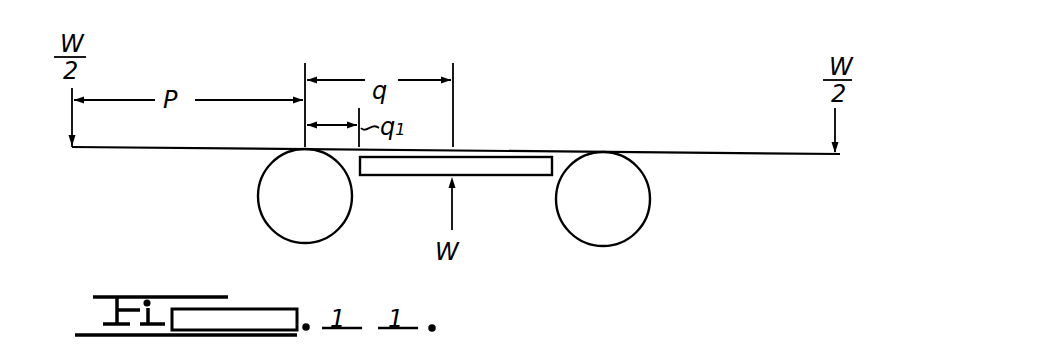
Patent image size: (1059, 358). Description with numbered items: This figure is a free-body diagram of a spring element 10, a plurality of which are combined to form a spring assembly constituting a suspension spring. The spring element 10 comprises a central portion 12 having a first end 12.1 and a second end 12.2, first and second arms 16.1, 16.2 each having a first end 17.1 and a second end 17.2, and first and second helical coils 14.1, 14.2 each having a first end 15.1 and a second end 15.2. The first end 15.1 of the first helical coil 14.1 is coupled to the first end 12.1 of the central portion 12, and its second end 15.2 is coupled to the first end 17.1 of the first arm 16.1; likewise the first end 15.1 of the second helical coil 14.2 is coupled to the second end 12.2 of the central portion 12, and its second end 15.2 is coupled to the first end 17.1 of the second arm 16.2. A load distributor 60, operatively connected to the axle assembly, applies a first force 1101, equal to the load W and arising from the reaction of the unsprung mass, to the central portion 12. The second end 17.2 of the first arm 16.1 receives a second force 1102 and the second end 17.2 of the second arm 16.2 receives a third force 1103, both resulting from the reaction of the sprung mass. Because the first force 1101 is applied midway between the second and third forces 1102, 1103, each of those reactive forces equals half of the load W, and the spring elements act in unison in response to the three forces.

The spring element 10 is at (772, 45).
The central portion 12 is at (510, 148).
The first end of the central portion 12.1 is at (347, 165).
The second end of the central portion 12.2 is at (575, 143).
The first helical coil 14.1 is at (281, 237).
The second helical coil 14.2 is at (608, 247).
The first end of the helical coil 15.1 is at (499, 182).
The second end of the helical coil 15.2 is at (448, 241).
The first arm 16.1 is at (113, 148).
The second arm 16.2 is at (738, 125).
The first end of the arm 17.1 is at (262, 155).
The second end of the arm 17.2 is at (66, 163).
The load distributor 60 is at (512, 178).
The first force 1101 is at (465, 253).
The second force 1102 is at (90, 50).
The third force 1103 is at (858, 68).